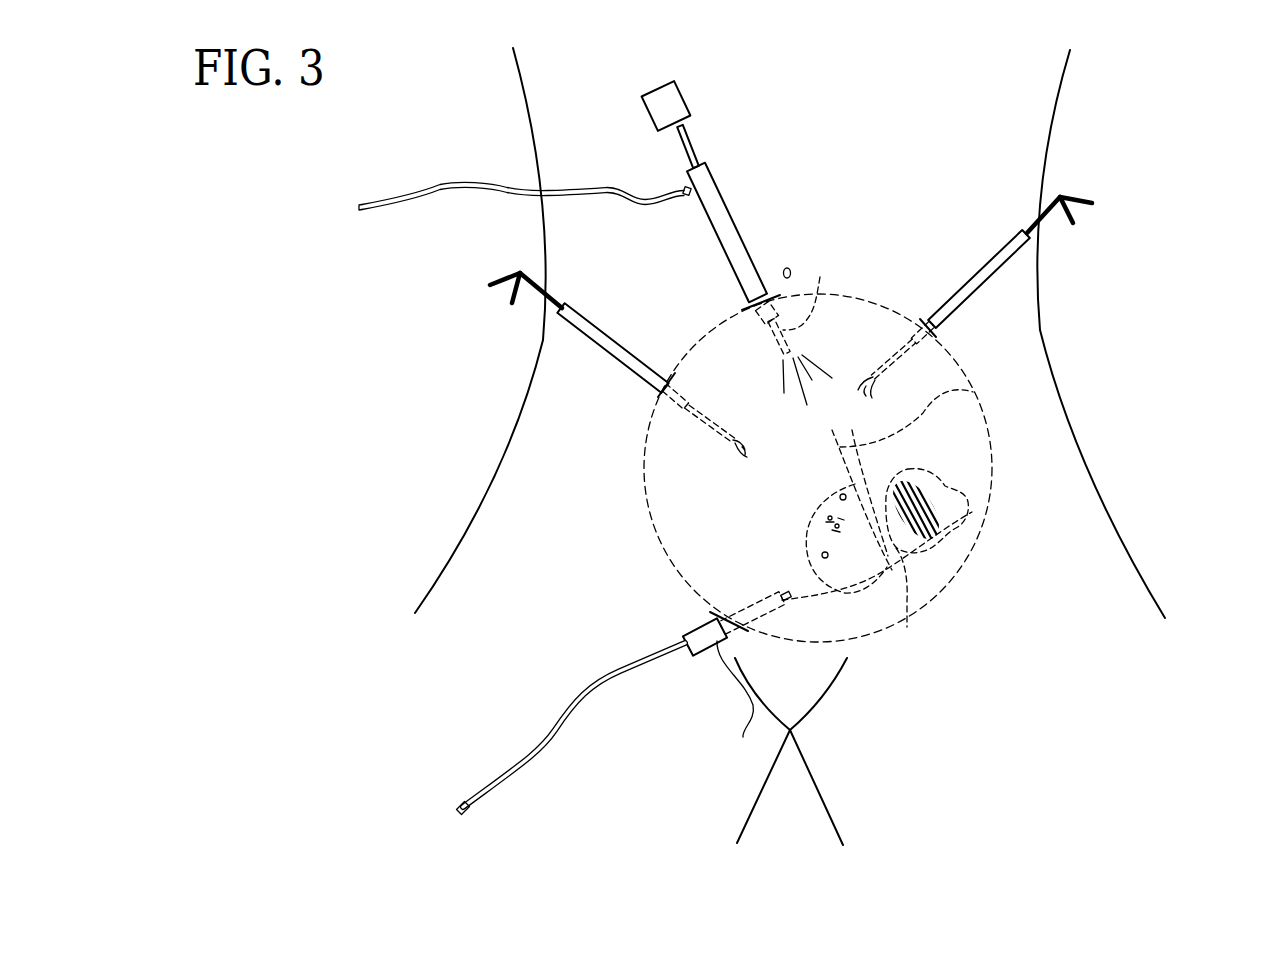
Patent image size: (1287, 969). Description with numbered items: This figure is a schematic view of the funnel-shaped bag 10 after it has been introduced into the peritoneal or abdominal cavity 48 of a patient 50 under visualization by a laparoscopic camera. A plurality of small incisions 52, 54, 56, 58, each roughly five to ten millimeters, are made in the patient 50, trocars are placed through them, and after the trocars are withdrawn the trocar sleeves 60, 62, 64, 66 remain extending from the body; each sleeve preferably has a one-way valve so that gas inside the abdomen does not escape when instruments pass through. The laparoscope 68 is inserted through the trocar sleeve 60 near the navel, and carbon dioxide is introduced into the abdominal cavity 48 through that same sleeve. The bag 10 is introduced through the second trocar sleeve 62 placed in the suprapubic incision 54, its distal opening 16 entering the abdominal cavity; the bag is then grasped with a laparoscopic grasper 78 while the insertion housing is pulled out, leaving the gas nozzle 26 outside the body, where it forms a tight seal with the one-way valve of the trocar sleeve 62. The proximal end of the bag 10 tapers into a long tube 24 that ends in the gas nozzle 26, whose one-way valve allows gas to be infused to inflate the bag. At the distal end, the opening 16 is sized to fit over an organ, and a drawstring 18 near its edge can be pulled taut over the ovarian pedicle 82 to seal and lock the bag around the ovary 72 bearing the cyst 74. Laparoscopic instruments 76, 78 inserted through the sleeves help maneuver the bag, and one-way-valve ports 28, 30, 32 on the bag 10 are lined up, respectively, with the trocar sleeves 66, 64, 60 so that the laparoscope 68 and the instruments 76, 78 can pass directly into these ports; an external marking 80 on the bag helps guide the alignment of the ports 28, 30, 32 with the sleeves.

The bag 10 is at (863, 590).
The opening 16 is at (907, 627).
The drawstring 18 is at (973, 392).
The tube 24 is at (536, 745).
The gas nozzle 26 is at (457, 813).
The port 28 is at (838, 495).
The port 30 is at (820, 555).
The port 32 is at (826, 522).
The abdominal cavity 48 is at (987, 458).
The patient 50 is at (1177, 577).
The incision 52 is at (772, 293).
The suprapubic incision 54 is at (713, 622).
The incision 56 is at (667, 380).
The incision 58 is at (935, 330).
The trocar sleeve 60 is at (731, 208).
The trocar sleeve 62 is at (735, 704).
The trocar sleeve 64 is at (620, 365).
The trocar sleeve 66 is at (977, 268).
The laparoscope 68 is at (820, 277).
The ovary 72 is at (950, 535).
The cyst 74 is at (940, 507).
The laparoscopic instrument 76 is at (700, 420).
The laparoscopic grasper 78 is at (893, 372).
The external marking 80 is at (808, 537).
The ovarian pedicle 82 is at (967, 493).